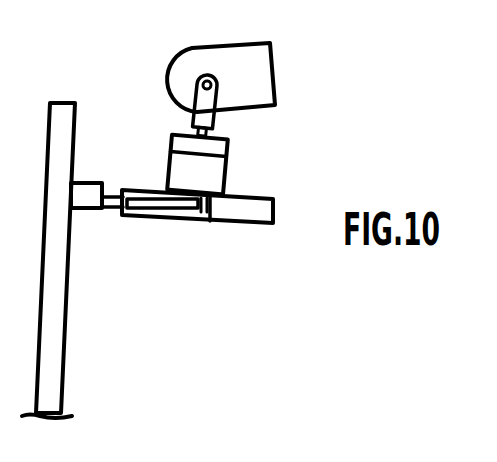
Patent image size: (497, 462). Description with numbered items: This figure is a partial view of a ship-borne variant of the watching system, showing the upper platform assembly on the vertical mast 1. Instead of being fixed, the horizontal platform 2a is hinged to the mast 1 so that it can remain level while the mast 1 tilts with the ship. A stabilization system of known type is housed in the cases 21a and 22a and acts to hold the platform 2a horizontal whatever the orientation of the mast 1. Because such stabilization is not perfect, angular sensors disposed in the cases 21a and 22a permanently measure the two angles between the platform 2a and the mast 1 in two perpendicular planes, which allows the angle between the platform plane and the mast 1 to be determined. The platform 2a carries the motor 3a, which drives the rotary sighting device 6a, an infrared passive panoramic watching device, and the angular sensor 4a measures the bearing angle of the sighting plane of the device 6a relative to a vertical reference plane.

The vertical mast 1 is at (48, 345).
The case 21a is at (83, 197).
The case 22a is at (203, 214).
The horizontal platform 2a is at (232, 206).
The motor 3a is at (218, 180).
The angular sensor 4a is at (222, 148).
The rotary sighting device 6a is at (187, 82).